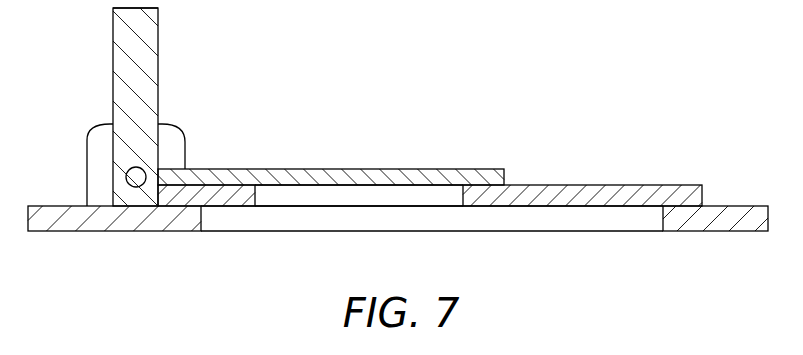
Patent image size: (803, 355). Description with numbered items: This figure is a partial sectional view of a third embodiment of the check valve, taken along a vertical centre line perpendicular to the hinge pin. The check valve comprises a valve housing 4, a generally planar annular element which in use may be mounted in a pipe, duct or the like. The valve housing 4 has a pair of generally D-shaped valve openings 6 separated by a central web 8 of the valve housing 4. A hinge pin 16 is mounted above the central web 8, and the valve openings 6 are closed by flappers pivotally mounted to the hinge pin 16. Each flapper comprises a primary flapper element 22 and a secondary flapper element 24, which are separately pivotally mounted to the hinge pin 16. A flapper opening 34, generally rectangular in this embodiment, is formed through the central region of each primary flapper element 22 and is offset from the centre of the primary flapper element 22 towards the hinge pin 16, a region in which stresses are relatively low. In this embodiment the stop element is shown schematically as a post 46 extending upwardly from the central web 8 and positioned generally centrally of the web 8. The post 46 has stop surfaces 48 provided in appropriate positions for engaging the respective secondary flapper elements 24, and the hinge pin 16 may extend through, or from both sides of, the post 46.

The valve housing 4 is at (717, 231).
The valve opening 6 is at (485, 231).
The central web 8 is at (115, 231).
The hinge pin 16 is at (126, 177).
The primary flapper element 22 is at (680, 185).
The secondary flapper element 24 is at (480, 170).
The flapper opening 34 is at (360, 197).
The post 46 is at (150, 58).
The stop surface 48 is at (113, 14).